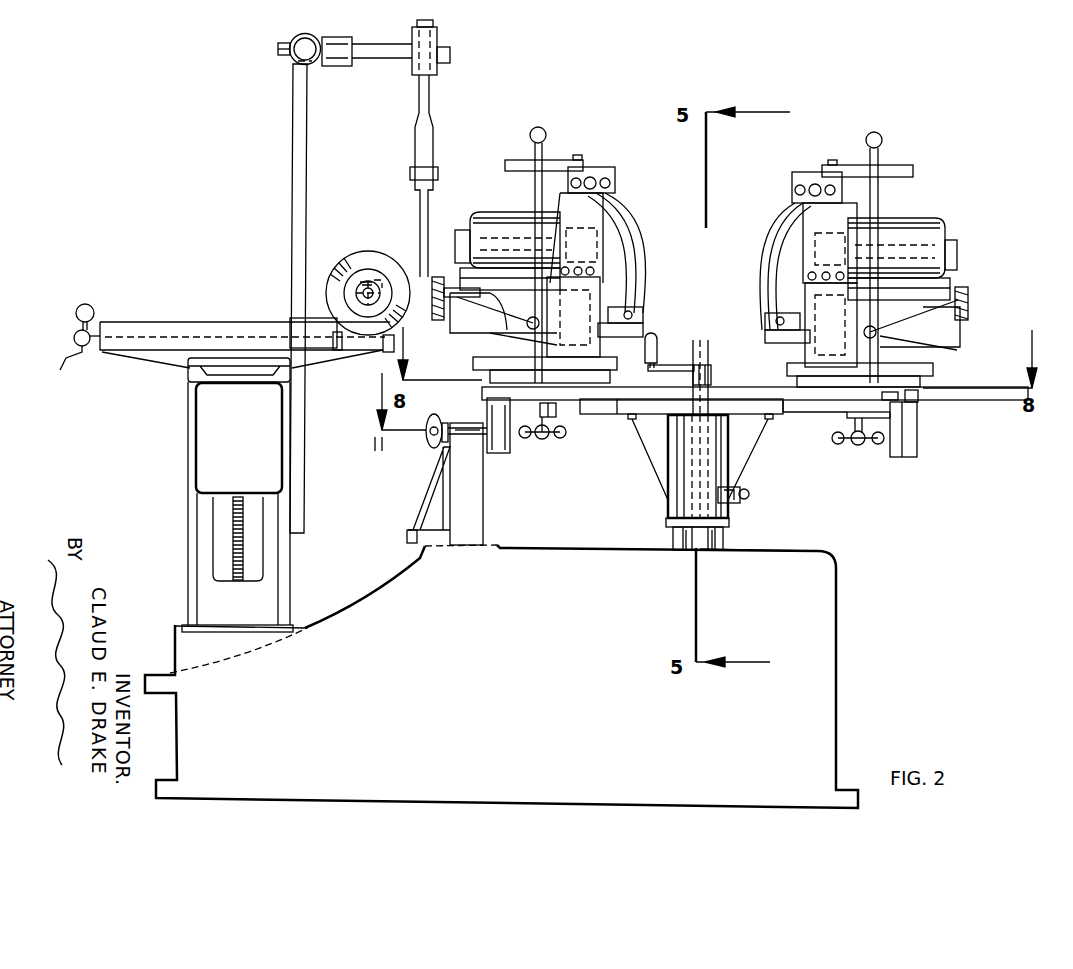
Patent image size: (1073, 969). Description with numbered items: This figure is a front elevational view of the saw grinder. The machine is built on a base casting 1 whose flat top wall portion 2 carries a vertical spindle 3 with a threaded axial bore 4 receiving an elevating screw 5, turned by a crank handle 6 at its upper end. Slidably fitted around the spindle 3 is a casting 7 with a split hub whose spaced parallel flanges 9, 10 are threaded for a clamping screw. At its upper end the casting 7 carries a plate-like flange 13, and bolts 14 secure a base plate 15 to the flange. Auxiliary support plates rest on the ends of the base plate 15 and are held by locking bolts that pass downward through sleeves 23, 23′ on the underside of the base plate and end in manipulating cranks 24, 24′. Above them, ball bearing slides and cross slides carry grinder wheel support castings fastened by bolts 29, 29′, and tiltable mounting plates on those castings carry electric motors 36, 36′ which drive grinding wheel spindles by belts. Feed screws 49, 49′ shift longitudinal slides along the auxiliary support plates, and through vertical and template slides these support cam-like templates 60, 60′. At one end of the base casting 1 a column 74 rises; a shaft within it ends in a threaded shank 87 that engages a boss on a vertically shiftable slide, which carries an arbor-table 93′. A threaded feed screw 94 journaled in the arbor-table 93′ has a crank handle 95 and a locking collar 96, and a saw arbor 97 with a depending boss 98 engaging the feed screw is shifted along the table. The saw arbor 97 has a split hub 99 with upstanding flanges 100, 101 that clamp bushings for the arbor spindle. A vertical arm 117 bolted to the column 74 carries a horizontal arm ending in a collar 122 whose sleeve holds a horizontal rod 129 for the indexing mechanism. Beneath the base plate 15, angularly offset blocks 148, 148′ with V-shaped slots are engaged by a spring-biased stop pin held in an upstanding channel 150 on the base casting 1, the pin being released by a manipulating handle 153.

The base casting 1 is at (838, 692).
The flat top wall portion 2 is at (815, 551).
The vertical spindle 3 is at (722, 545).
The threaded axial bore 4 is at (700, 495).
The elevating screw 5 is at (712, 390).
The crank handle 6 is at (660, 347).
The casting 7 is at (720, 514).
The flange 9 is at (688, 548).
The flange 10 is at (708, 548).
The plate-like flange 13 is at (620, 401).
The bolts 14 is at (633, 420).
The base plate 15 is at (838, 403).
The sleeve 23 is at (880, 420).
The sleeve 23′ is at (552, 418).
The manipulating crank 24 is at (878, 446).
The manipulating crank 24′ is at (545, 440).
The bolts 29 is at (935, 343).
The bolts 29′ is at (478, 338).
The electric motor 36 is at (928, 218).
The electric motor 36′ is at (512, 212).
The feed screw 49 is at (823, 387).
The feed screw 49′ is at (585, 383).
The cam-like template 60 is at (913, 172).
The cam-like template 60′ is at (505, 165).
The column 74 is at (187, 556).
The threaded shank 87 is at (243, 550).
The arbor-table 93′ is at (165, 364).
The threaded feed screw 94 is at (135, 330).
The crank handle 95 is at (62, 358).
The locking collar 96 is at (388, 352).
The saw arbor 97 is at (355, 292).
The depending boss 98 is at (336, 352).
The split hub 99 is at (372, 251).
The upstanding flange 100 is at (350, 270).
The upstanding flange 101 is at (385, 270).
The vertical arm 117 is at (293, 193).
The collar 122 is at (292, 60).
The rod 129 is at (450, 52).
The angularly offset block 148 is at (912, 457).
The angularly offset block 148′ is at (500, 453).
The upstanding channel 150 is at (484, 509).
The manipulating handle 153 is at (428, 443).